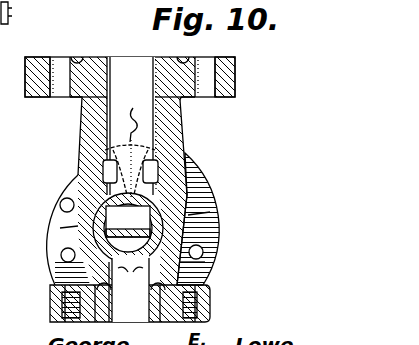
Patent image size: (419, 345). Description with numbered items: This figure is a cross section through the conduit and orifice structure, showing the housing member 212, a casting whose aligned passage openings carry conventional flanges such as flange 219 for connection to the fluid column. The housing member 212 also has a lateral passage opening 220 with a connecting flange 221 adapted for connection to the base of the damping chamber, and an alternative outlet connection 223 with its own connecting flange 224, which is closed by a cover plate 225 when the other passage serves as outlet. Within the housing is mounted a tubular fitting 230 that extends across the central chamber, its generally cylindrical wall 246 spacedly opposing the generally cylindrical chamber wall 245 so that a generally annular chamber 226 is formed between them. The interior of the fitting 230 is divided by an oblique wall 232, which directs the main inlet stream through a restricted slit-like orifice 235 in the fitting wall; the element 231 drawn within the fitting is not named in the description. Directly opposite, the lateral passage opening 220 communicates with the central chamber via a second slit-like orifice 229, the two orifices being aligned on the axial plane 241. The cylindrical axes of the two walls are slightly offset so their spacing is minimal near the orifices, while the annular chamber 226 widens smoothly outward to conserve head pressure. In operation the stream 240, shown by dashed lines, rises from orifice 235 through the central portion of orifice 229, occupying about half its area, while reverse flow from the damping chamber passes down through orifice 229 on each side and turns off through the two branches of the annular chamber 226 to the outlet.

The housing member 212 is at (193, 126).
The flange 219 is at (200, 246).
The lateral passage opening 220 is at (110, 70).
The connecting flange 221 is at (236, 62).
The alternative outlet connection 223 is at (115, 318).
The connecting flange 224 is at (211, 307).
The cover plate 225 is at (12, 14).
The annular chamber 226 is at (190, 228).
The slit-like orifice 229 is at (90, 170).
The tubular fitting 230 is at (190, 191).
The ball valve member 231 is at (128, 228).
The oblique wall 232 is at (193, 268).
The slit-like orifice 235 is at (76, 207).
The stream 240 is at (147, 155).
The axial plane 241 is at (130, 145).
The chamber wall 245 is at (67, 242).
The cylindrical wall of fitting 246 is at (70, 226).